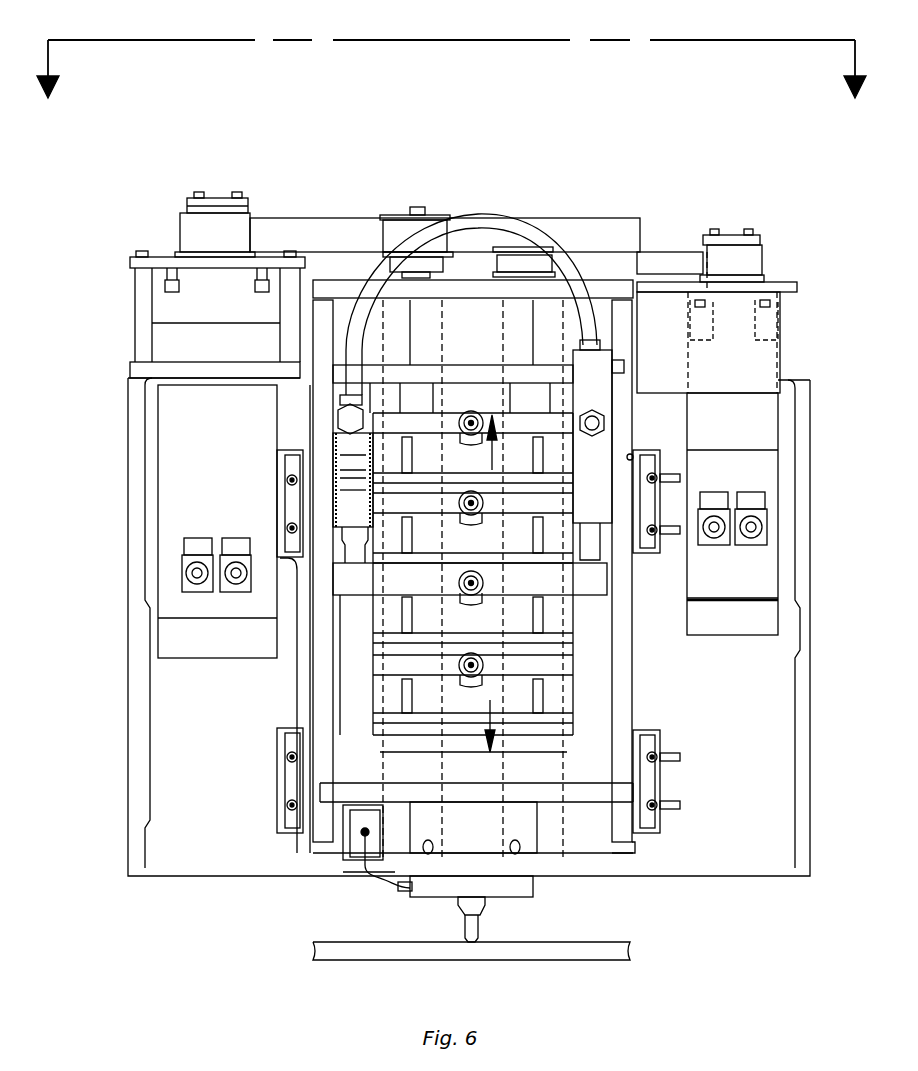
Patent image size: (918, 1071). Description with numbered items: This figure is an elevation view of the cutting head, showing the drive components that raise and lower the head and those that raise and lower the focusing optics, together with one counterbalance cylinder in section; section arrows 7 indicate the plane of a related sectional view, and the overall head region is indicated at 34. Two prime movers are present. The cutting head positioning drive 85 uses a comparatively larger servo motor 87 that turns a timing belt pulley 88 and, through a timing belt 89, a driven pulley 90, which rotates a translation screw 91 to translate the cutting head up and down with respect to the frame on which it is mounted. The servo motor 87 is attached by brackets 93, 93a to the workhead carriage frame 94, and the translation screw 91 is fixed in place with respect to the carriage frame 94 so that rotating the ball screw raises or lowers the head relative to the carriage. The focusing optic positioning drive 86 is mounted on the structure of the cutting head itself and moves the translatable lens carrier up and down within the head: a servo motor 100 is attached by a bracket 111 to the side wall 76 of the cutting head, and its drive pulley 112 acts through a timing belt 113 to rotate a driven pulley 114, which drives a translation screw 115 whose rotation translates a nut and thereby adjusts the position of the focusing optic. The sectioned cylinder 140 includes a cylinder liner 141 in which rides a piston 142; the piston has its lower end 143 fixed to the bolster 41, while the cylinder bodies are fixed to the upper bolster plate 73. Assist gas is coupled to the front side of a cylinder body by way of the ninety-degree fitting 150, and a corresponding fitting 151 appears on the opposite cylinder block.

The section line 7 is at (451, 53).
The processing head 34 is at (258, 900).
The bolster 41 is at (523, 580).
The upper bolster plate 73 is at (393, 372).
The side wall 76 is at (620, 297).
The cutting head positioning drive 85 is at (132, 203).
The focusing optic positioning drive 86 is at (738, 196).
The servo motor 87 is at (165, 378).
The timing belt pulley 88 is at (266, 206).
The timing belt 89 is at (312, 218).
The driven pulley 90 is at (388, 215).
The translation screw 91 is at (421, 206).
The bracket 93 is at (150, 257).
The bracket 93a is at (135, 288).
The carriage frame 94 is at (128, 500).
The servo motor 100 is at (750, 392).
The bracket 111 is at (710, 393).
The drive pulley 112 is at (768, 252).
The timing belt 113 is at (655, 254).
The driven pulley 114 is at (512, 245).
The translation screw 115 is at (526, 240).
The cylinder 140 is at (333, 443).
The cylinder liner 141 is at (340, 457).
The piston 142 is at (347, 515).
The lower end 143 is at (352, 597).
The fitting 150 is at (337, 424).
The fitting 151 is at (600, 425).